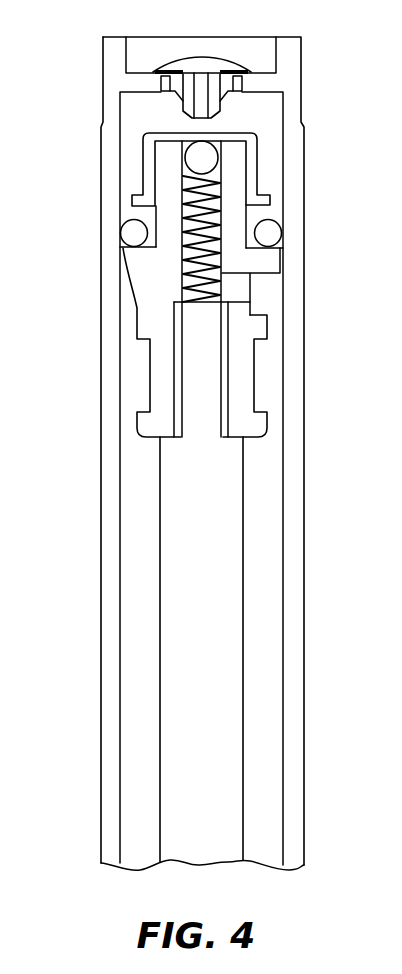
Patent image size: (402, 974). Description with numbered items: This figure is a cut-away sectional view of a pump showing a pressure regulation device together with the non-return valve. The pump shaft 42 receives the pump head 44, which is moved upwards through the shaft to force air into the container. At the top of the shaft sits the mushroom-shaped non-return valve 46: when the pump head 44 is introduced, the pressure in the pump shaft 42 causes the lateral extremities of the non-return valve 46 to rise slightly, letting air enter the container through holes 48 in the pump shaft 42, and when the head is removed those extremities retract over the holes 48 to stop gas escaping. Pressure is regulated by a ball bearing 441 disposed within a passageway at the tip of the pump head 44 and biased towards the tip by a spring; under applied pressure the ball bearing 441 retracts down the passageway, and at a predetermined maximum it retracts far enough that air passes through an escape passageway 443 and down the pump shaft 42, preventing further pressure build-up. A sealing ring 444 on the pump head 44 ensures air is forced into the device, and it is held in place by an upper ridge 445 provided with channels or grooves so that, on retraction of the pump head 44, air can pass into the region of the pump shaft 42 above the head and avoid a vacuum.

The pump shaft 42 is at (110, 278).
The pump head 44 is at (197, 535).
The non-return valve 46 is at (208, 62).
The holes 48 is at (162, 82).
The ball bearing 441 is at (203, 156).
The escape passageway 443 is at (233, 287).
The sealing ring 444 is at (130, 233).
The upper ridge 445 is at (270, 202).